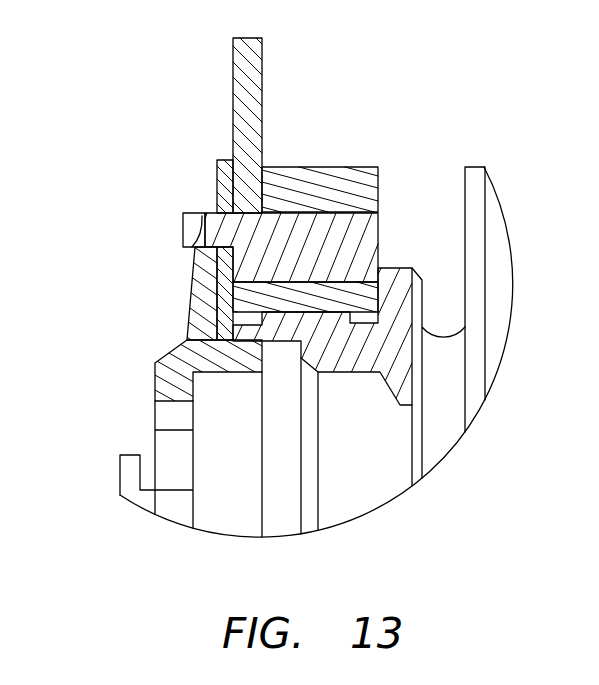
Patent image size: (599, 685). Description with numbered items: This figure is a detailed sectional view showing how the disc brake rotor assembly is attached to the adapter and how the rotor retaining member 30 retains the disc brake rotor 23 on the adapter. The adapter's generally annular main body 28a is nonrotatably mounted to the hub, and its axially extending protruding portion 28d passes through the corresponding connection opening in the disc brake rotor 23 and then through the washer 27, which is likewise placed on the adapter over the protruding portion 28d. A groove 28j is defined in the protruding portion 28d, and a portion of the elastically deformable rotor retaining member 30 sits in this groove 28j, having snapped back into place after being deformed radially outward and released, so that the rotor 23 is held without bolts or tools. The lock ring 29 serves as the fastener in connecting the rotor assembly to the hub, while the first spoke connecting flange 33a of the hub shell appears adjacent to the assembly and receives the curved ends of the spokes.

The disc brake rotor 23 is at (258, 62).
The washer 27 is at (215, 160).
The main body 28a is at (336, 173).
The protruding portion 28d is at (182, 227).
The groove 28j is at (195, 252).
The lock ring 29 is at (160, 378).
The rotor retaining member 30 is at (183, 215).
The first spoke connecting flange 33a is at (483, 168).